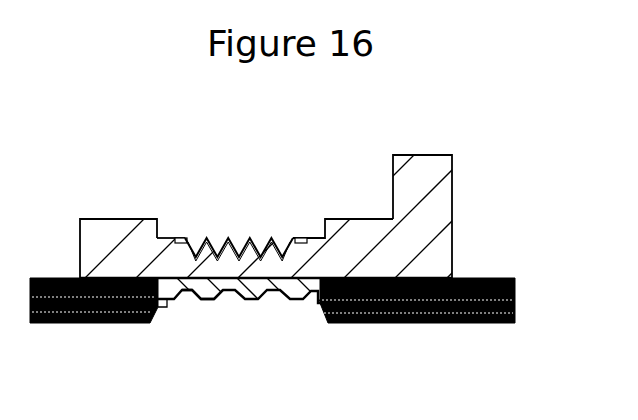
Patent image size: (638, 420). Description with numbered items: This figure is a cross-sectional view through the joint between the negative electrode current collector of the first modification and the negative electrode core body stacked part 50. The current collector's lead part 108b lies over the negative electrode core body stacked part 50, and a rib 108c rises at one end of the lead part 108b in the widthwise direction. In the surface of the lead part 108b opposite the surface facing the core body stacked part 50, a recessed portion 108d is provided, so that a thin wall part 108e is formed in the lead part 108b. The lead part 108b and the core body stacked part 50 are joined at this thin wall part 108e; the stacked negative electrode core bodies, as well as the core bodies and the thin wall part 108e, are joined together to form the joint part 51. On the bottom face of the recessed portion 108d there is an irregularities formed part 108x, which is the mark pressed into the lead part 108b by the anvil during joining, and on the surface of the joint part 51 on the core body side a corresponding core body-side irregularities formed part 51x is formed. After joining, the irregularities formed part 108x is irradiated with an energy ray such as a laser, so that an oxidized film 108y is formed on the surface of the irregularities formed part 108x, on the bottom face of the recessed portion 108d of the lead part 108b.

The lead part 108b is at (97, 248).
The recessed portion 108d is at (170, 237).
The irregularities formed part 108x is at (232, 240).
The oxidized film 108y is at (216, 238).
The thin wall part 108e is at (295, 238).
The rib 108c is at (427, 202).
The negative electrode core body stacked part 50 is at (85, 298).
The joint part 51 is at (252, 290).
The core body-side irregularities formed part 51x is at (193, 302).